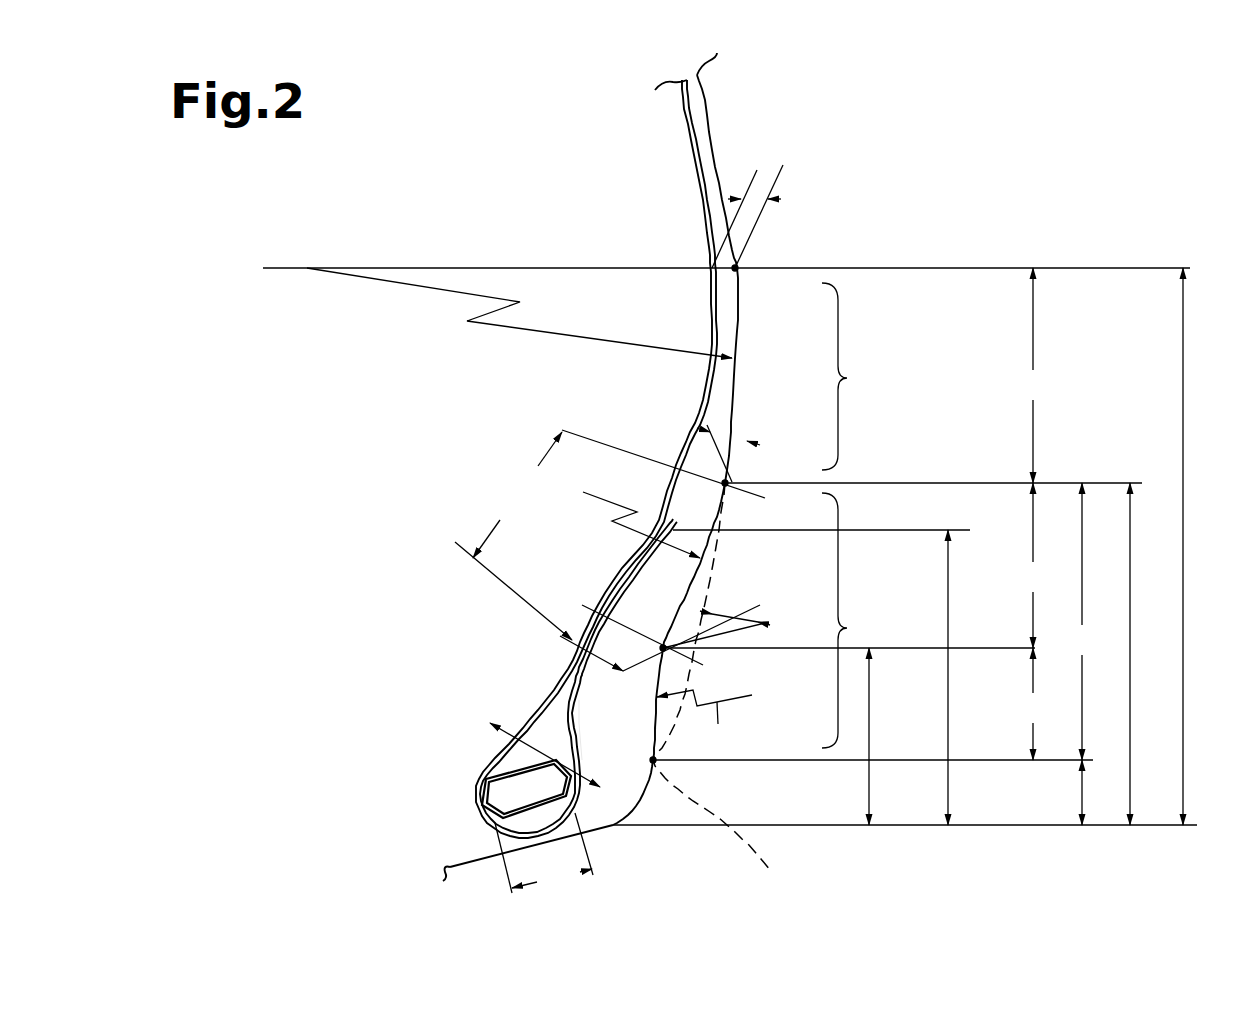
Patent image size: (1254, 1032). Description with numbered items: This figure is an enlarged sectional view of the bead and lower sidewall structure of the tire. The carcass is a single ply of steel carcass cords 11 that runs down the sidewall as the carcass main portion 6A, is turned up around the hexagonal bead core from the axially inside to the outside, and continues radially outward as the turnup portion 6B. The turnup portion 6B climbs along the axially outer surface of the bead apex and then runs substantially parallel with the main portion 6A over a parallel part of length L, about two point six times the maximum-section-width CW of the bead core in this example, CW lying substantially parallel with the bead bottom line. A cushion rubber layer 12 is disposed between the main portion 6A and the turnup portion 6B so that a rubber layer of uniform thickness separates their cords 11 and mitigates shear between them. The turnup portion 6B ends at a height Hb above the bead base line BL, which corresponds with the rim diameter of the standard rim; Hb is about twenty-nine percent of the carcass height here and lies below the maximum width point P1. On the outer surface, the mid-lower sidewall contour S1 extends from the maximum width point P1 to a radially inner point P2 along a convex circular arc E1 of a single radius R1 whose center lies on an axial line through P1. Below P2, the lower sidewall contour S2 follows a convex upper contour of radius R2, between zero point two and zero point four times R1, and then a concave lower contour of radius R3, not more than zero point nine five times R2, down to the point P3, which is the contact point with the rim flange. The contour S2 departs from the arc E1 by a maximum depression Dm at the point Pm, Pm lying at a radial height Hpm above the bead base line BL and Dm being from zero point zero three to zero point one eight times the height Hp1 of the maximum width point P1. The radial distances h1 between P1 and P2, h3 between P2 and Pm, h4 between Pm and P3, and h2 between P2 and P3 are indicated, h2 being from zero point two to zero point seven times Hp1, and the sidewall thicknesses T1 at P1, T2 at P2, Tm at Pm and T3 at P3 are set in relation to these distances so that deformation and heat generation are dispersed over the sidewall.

The carcass main portion 6A is at (688, 130).
The carcass turnup portion 6B is at (568, 676).
The carcass cords 11 is at (703, 552).
The cushion rubber layer 12 is at (683, 680).
The circular arc line E1 is at (741, 324).
The maximum width point P1 is at (740, 266).
The radially inner point P2 is at (727, 482).
The contact point P3 is at (653, 763).
The point of maximum depression Pm is at (663, 648).
The bead base line BL is at (983, 826).
The thickness at maximum width point T1 is at (753, 202).
The thickness at point P2 T2 is at (745, 436).
The thickness at point P3 T3 is at (478, 752).
The thickness at point Pm Tm is at (558, 660).
The radius of circular arc E1 R1 is at (533, 328).
The radius of convex upper contour R2 is at (597, 503).
The radius of concave lower contour R3 is at (704, 722).
The length of parallel part L is at (513, 536).
The maximum-section-width of bead core CW is at (544, 857).
The maximum depression Dm is at (753, 598).
The mid-lower sidewall contour S1 is at (849, 376).
The lower sidewall contour S2 is at (849, 620).
The radial distance between P1 and P2 h1 is at (1032, 375).
The radial distance between P2 and P3 h2 is at (1098, 654).
The radial distance between P2 and Pm h3 is at (1032, 565).
The radial distance between Pm and P3 h4 is at (1032, 704).
The turnup height Hb is at (950, 738).
The radial height of point Pm Hpm is at (870, 727).
The height of maximum width point Hp1 is at (1185, 535).